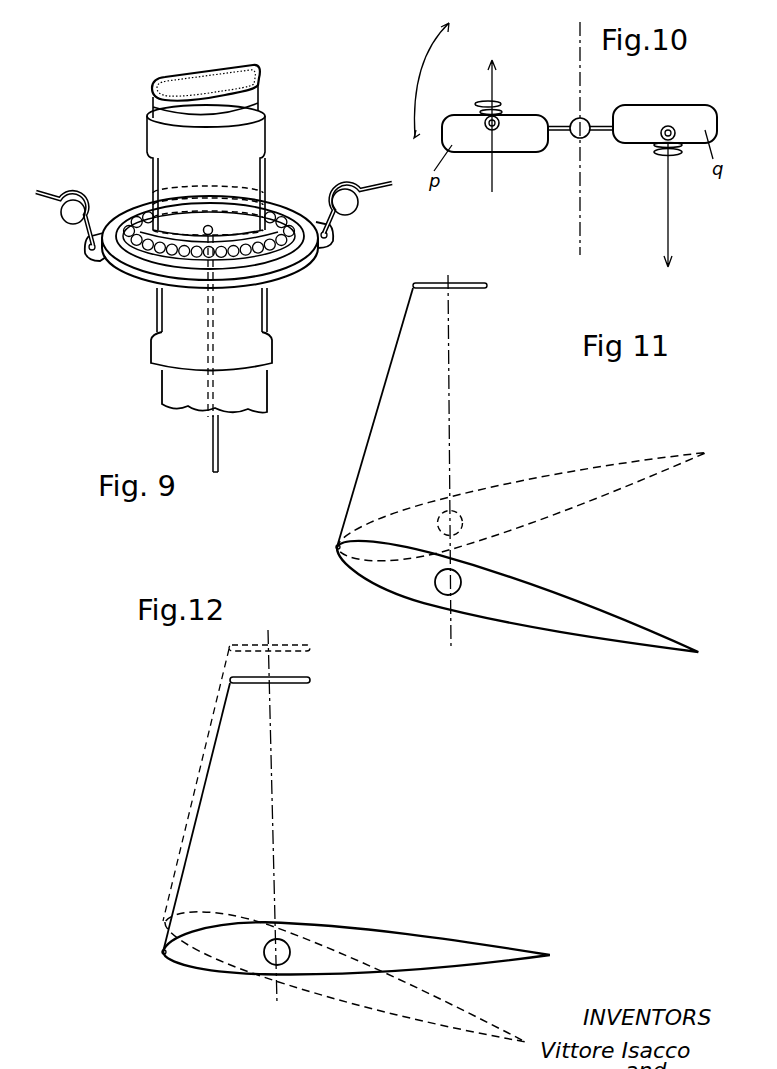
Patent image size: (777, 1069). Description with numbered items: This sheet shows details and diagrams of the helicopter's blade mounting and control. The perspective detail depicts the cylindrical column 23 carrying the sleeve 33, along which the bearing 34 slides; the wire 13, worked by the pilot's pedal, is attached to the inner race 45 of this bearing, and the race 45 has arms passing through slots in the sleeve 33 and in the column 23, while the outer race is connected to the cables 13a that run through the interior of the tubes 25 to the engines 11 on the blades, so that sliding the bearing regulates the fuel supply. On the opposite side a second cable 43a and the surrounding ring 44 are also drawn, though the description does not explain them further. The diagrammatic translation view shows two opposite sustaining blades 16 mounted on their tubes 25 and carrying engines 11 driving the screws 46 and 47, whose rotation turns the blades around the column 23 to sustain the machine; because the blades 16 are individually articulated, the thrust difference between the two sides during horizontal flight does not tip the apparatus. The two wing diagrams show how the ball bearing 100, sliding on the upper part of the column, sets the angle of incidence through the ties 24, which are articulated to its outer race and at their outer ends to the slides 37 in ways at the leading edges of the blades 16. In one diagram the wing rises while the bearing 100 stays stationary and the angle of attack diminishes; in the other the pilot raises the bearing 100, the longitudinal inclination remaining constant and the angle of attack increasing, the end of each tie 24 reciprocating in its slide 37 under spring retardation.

In FIG. 9, the wire 13 is at (218, 457).
In FIG. 9, the cables 13a is at (368, 181).
In FIG. 9, the cylindrical column 23 is at (259, 91).
In FIG. 10, the cylindrical column 23 is at (585, 120).
In FIG. 9, the sleeve 33 is at (136, 350).
In FIG. 9, the bearing 34 is at (135, 247).
In FIG. 9, the cable 43a is at (70, 199).
In FIG. 9, the ring 44 is at (303, 262).
In FIG. 9, the inner race 45 is at (270, 222).
In FIG. 10, the engines 11 is at (491, 130).
In FIG. 10, the sustaining blades 16 is at (533, 152).
In FIG. 11, the sustaining blades 16 is at (621, 645).
In FIG. 12, the sustaining blades 16 is at (418, 938).
In FIG. 10, the screw 46 is at (503, 113).
In FIG. 10, the screw 47 is at (500, 103).
In FIG. 11, the ties 24 is at (375, 417).
In FIG. 12, the ties 24 is at (192, 825).
In FIG. 11, the tube 25 is at (454, 510).
In FIG. 12, the tube 25 is at (282, 940).
In FIG. 11, the slides 37 is at (324, 531).
In FIG. 12, the slides 37 is at (172, 913).
In FIG. 11, the ball bearing 100 is at (479, 270).
In FIG. 12, the ball bearing 100 is at (311, 647).